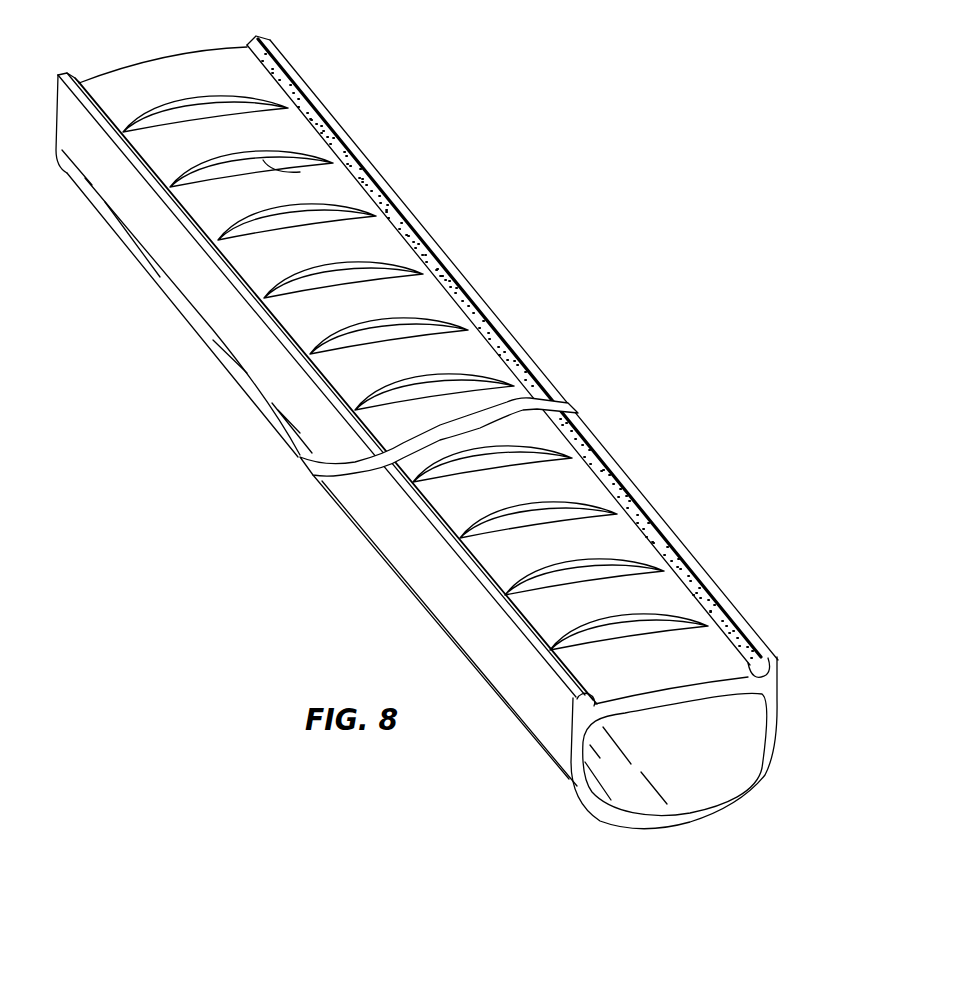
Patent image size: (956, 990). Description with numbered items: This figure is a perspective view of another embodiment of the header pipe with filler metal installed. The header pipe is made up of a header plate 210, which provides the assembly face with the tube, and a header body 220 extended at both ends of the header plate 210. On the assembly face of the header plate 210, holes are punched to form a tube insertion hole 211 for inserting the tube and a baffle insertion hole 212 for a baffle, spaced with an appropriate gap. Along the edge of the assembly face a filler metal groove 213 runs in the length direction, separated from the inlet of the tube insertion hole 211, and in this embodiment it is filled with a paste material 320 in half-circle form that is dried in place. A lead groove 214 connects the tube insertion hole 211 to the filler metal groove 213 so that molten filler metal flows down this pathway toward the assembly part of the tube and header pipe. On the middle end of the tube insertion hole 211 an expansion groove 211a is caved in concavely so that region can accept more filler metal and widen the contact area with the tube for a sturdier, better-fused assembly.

The header plate 210 is at (679, 650).
The tube insertion hole 211 is at (307, 220).
The expansion groove 211a is at (196, 101).
The baffle insertion hole 212 is at (332, 392).
The filler metal groove 213 is at (483, 573).
The lead groove 214 is at (462, 530).
The header body 220 is at (729, 798).
The paste material 320 is at (641, 518).